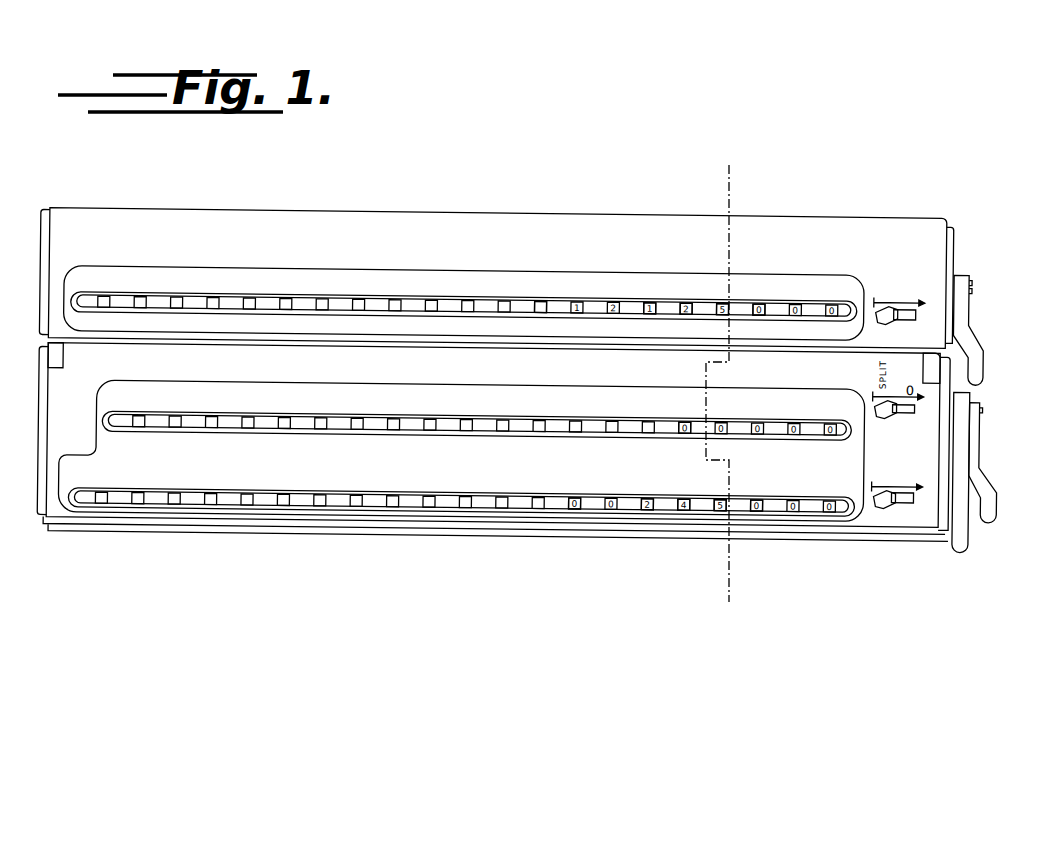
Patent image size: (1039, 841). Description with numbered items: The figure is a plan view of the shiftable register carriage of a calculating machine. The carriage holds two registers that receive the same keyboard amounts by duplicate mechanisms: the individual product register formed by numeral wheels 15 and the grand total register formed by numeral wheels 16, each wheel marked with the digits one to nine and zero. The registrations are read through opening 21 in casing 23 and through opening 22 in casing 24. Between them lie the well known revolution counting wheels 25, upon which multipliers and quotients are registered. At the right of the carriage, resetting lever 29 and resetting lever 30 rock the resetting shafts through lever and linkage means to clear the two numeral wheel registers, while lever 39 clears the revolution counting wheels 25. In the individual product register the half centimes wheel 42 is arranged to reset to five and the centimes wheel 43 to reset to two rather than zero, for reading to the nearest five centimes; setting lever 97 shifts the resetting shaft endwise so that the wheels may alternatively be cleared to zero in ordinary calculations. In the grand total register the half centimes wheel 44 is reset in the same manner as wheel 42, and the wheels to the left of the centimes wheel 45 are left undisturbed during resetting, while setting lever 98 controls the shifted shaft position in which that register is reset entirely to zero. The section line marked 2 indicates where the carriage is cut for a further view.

The section line 2- 2 is at (690, 581).
The numeral wheels 15 is at (638, 508).
The numeral wheels 16 is at (645, 301).
The opening 21 is at (573, 508).
The opening 22 is at (534, 307).
The casing 23 is at (482, 508).
The casing 24 is at (838, 230).
The revolution counting wheels 25 is at (686, 418).
The resetting lever 29 is at (992, 519).
The resetting lever 30 is at (983, 361).
The lever 39 is at (967, 547).
The half centimes wheel 42 is at (713, 508).
The centimes wheel 43 is at (678, 508).
The half centimes wheel 44 is at (717, 300).
The centimes wheel 45 is at (683, 301).
The setting lever 97 is at (883, 502).
The setting lever 98 is at (884, 315).